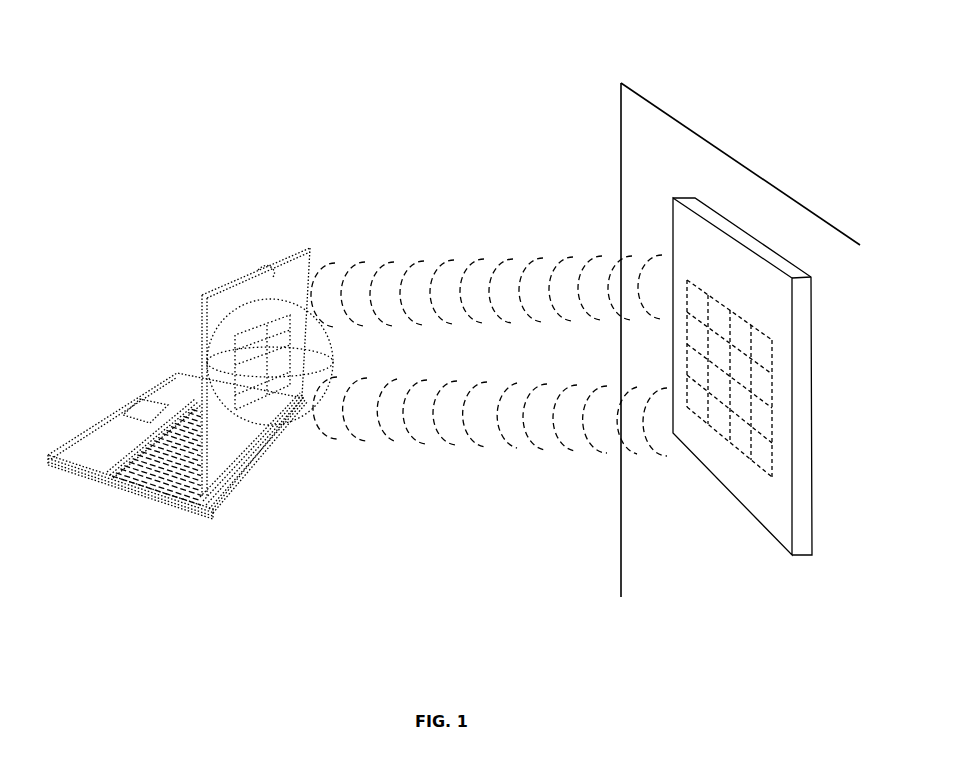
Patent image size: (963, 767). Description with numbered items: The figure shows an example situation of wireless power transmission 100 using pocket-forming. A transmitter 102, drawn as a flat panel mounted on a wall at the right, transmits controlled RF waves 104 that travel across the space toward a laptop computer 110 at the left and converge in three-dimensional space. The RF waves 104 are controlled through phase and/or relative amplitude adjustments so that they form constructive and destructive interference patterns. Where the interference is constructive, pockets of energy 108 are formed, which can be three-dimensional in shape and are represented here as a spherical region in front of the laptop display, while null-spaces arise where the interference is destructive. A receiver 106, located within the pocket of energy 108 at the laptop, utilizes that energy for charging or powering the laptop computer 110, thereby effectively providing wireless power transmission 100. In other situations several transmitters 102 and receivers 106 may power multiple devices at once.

The wireless power transmission 100 is at (109, 98).
The transmitter 102 is at (732, 237).
The RF waves 104 is at (482, 263).
The receiver 106 is at (238, 393).
The pockets of energy 108 is at (237, 305).
The laptop computer 110 is at (311, 248).